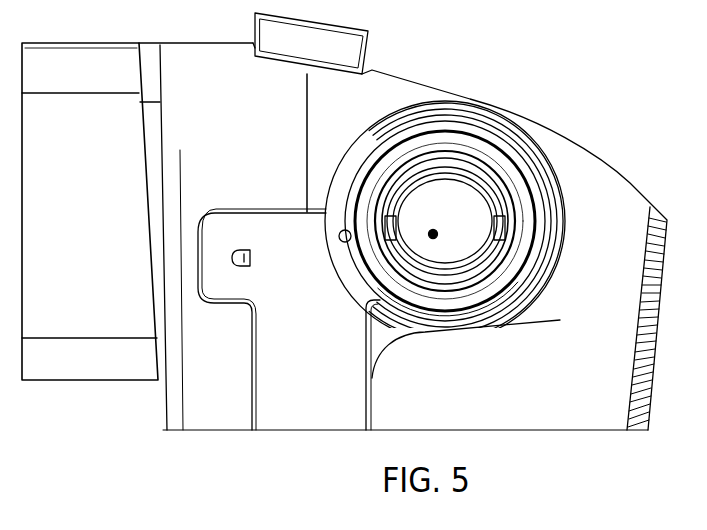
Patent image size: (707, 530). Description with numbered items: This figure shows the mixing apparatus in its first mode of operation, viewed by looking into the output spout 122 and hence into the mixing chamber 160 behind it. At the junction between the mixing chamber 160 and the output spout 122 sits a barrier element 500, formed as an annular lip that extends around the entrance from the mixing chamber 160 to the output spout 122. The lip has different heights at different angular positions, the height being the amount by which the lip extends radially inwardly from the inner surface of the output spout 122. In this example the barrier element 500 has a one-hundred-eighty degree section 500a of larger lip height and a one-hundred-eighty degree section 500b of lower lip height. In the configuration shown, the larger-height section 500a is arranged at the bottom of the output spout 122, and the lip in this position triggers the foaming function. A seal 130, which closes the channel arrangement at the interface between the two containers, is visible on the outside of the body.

The seal 130 is at (275, 400).
The output spout 122 is at (512, 163).
The mixing chamber 160 is at (433, 234).
The barrier element 500 is at (493, 206).
The section of larger lip height 500a is at (490, 242).
The section of lower lip height 500b is at (462, 154).